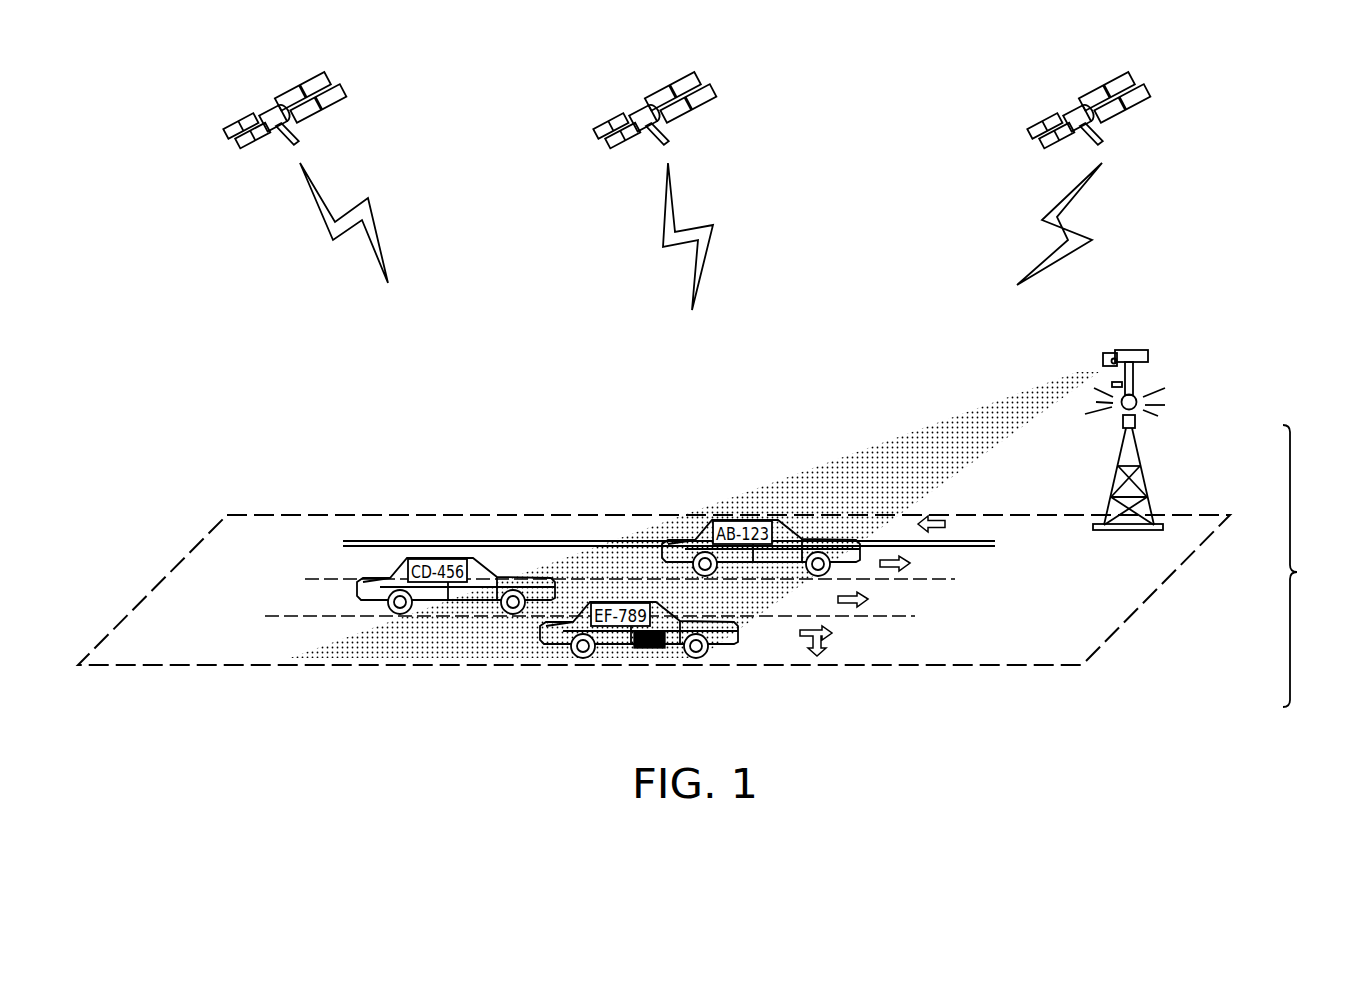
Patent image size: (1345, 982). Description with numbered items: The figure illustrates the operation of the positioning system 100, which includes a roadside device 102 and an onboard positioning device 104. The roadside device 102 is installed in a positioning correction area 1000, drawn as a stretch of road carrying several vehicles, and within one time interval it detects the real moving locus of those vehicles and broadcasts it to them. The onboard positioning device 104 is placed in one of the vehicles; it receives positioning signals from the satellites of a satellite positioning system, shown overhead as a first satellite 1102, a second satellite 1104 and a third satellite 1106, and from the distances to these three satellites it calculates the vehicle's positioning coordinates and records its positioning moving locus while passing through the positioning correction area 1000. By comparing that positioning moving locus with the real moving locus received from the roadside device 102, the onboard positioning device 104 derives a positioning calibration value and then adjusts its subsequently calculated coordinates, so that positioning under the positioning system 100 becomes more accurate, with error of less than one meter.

The positioning system 100 is at (1312, 566).
The roadside device 102 is at (1168, 418).
The onboard positioning device 104 is at (658, 652).
The positioning correction area 1000 is at (407, 510).
The first satellite 1102 is at (330, 76).
The second satellite 1104 is at (697, 73).
The third satellite 1106 is at (1127, 72).